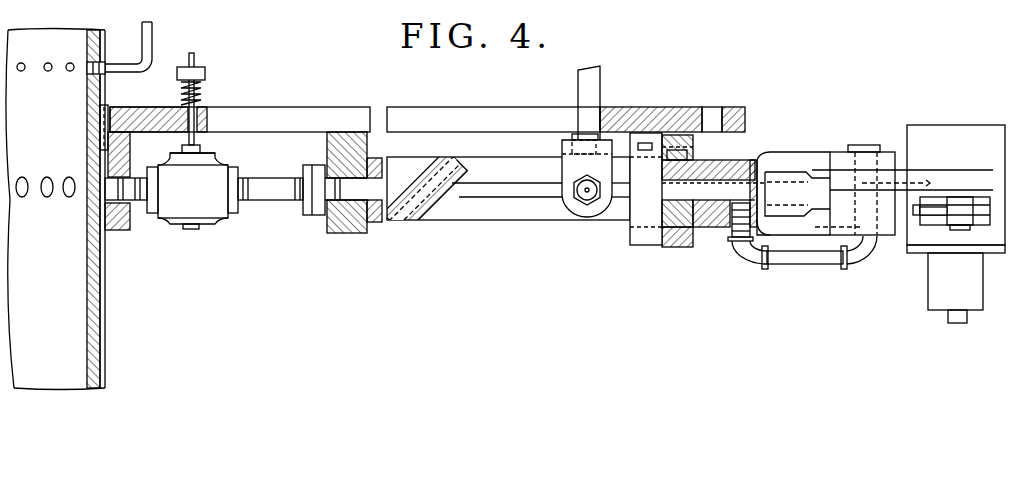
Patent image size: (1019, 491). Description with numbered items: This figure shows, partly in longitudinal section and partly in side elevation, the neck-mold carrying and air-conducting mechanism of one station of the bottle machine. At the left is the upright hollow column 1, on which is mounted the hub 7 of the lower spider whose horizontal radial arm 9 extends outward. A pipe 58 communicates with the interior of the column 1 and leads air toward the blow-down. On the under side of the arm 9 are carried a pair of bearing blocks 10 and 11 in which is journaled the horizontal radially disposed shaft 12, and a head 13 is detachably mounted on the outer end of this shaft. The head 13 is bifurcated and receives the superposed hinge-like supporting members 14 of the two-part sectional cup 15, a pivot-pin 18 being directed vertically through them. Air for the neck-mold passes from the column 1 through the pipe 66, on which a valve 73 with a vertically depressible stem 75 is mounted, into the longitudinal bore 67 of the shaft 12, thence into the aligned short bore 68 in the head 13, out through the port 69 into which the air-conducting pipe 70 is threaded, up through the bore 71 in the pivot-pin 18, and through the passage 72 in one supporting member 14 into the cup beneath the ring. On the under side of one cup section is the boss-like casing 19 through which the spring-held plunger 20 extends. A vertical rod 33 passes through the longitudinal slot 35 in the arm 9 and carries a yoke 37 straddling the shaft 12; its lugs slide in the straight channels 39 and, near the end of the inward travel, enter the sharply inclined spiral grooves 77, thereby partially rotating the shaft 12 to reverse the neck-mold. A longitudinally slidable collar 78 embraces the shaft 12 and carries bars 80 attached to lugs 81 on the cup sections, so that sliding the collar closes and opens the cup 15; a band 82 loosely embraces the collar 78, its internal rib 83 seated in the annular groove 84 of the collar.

The hollow standard or column 1 is at (62, 38).
The pipe 58 is at (152, 33).
The hub 7 is at (122, 143).
The stem 75 is at (198, 63).
The valve 73 is at (200, 215).
The pipe 66 is at (267, 198).
The bearing block 10 is at (347, 233).
The longitudinal bore 67 is at (370, 222).
The longitudinal slot 35 is at (448, 113).
The radial arm 9 is at (623, 108).
The vertical shaft or rod 33 is at (578, 89).
The shaft 12 is at (533, 221).
The spiral grooves 77 is at (445, 178).
The grooves or channels 39 is at (512, 196).
The yoke 37 is at (567, 163).
The bearing block 11 is at (634, 234).
The band 82 is at (668, 137).
The internal rib 83 is at (676, 154).
The collar 78 is at (693, 152).
The annular groove 84 is at (672, 233).
The short bore 68 is at (715, 200).
The port 69 is at (740, 204).
The air-conducting pipe 70 is at (802, 262).
The head 13 is at (760, 170).
The hinge-like supporting members 14 is at (836, 197).
The pivot-pin 18 is at (867, 145).
The bore 71 is at (837, 224).
The passage 72 is at (912, 168).
The two-part sectional cup 15 is at (937, 131).
The lugs 81 is at (949, 201).
The bars 80 is at (920, 214).
The casing 19 is at (929, 288).
The plunger 20 is at (947, 320).